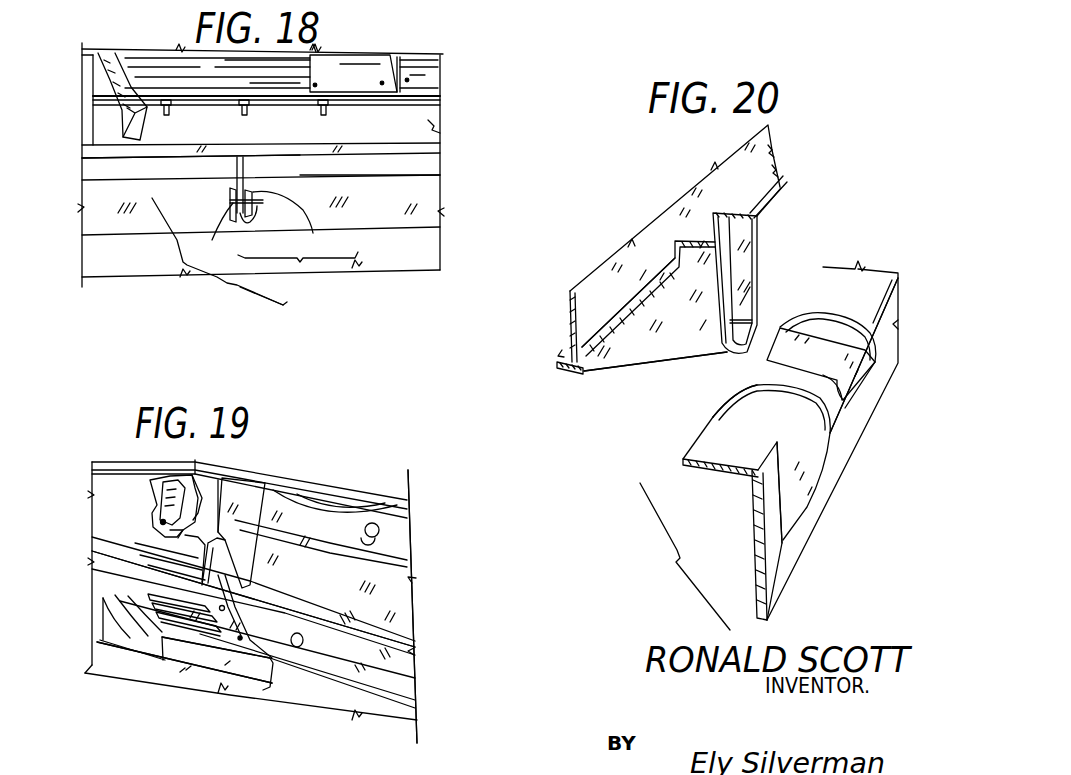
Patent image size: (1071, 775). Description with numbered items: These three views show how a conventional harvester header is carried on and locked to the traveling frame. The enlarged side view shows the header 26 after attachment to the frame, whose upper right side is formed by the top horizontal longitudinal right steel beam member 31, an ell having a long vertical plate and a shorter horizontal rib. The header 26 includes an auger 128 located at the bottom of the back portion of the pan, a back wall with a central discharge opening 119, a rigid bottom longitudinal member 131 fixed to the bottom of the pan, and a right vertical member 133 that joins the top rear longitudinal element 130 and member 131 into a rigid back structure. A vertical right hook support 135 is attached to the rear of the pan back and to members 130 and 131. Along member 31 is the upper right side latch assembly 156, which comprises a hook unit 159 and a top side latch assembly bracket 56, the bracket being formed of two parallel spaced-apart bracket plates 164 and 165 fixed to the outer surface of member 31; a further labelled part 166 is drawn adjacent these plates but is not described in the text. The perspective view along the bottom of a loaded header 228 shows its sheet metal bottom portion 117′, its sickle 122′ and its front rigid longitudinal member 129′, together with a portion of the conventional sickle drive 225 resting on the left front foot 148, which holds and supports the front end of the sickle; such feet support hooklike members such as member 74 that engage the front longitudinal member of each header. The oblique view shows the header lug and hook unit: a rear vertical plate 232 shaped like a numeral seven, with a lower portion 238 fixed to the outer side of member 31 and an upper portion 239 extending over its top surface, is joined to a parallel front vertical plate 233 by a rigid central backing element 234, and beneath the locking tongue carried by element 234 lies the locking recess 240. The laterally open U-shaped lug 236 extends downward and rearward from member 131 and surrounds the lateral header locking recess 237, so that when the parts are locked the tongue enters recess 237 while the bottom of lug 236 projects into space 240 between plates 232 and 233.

In FIG. 18, the header 26 is at (422, 168).
In FIG. 18, the top horizontal longitudinal right steel beam member 31 is at (388, 264).
In FIG. 20, the top horizontal longitudinal right steel beam member 31 is at (685, 556).
In FIG. 18, the top side latch assembly bracket 56 is at (273, 292).
In FIG. 19, the hooklike member 74 is at (267, 667).
In FIG. 19, the imperforate sheet metal bottom portion 117′ is at (320, 690).
In FIG. 18, the central discharge opening 119 is at (92, 123).
In FIG. 19, the sickle 122′ is at (150, 655).
In FIG. 18, the auger 128 is at (100, 82).
In FIG. 19, the front rigid longitudinal member 129′ is at (262, 581).
In FIG. 20, the rigid top rear longitudinal element 130 is at (616, 338).
In FIG. 18, the rigid bottom longitudinal member 131 is at (123, 153).
In FIG. 20, the right vertical member 133 is at (781, 200).
In FIG. 20, the vertical right hook support 135 is at (682, 240).
In FIG. 19, the left front foot 148 is at (243, 680).
In FIG. 18, the upper right side latch assembly 156 is at (230, 288).
In FIG. 18, the hook unit 159 is at (240, 170).
In FIG. 18, the bracket plate 164 is at (243, 220).
In FIG. 18, the bracket plate 165 is at (297, 221).
In FIG. 18, the loop 166 is at (208, 230).
In FIG. 19, the sickle drive mechanism 225 is at (163, 517).
In FIG. 19, the header 228 is at (429, 613).
In FIG. 20, the rear vertical plate 232 is at (892, 460).
In FIG. 20, the front vertical plate 233 is at (843, 317).
In FIG. 20, the central backing element 234 is at (867, 411).
In FIG. 20, the U-shaped lug 236 is at (683, 342).
In FIG. 20, the lateral header locking recess 237 is at (747, 323).
In FIG. 20, the lower portion 238 is at (800, 487).
In FIG. 20, the upper portion 239 is at (714, 416).
In FIG. 20, the locking recess 240 is at (762, 377).